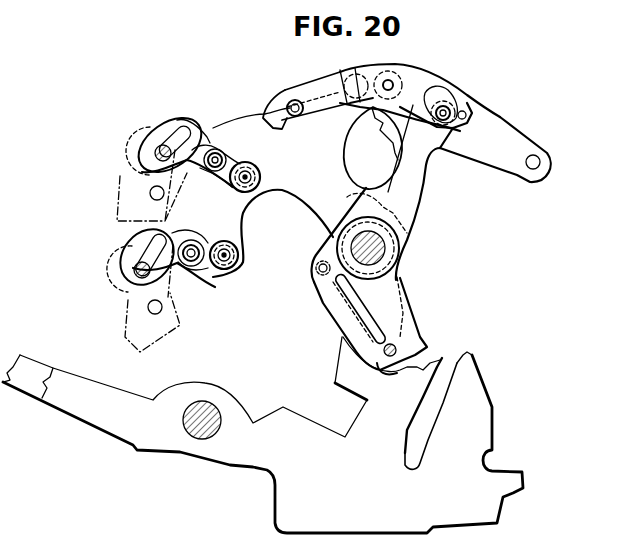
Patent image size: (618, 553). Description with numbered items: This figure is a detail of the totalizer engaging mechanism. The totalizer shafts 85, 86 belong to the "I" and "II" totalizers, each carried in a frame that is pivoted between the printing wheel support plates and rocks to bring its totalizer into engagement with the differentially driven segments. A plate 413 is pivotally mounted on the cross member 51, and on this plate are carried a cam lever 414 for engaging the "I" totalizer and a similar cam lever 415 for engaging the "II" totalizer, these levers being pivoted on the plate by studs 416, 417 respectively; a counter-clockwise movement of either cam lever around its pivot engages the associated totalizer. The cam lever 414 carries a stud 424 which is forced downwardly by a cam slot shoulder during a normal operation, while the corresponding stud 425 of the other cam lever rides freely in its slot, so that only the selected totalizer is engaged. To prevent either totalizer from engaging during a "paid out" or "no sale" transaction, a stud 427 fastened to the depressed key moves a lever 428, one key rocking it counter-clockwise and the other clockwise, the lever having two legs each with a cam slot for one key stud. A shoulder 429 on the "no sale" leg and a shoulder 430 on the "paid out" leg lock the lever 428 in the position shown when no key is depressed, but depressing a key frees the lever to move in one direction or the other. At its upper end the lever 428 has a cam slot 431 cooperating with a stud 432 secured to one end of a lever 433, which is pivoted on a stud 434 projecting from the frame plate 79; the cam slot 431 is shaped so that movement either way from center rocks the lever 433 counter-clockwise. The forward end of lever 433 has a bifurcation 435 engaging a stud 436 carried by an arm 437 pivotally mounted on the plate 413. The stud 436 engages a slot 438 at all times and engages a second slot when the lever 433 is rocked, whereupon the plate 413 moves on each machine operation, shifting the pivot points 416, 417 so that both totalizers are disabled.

The cross member 51 is at (383, 248).
The printing wheel support plate 79 is at (517, 133).
The totalizer shaft 85 is at (142, 172).
The totalizer shaft 86 is at (133, 268).
The plate 413 is at (262, 196).
The cam lever 414 is at (232, 180).
The cam lever 415 is at (212, 247).
The stud 416 is at (252, 171).
The stud 417 is at (236, 254).
The stud 424 is at (229, 155).
The stud 425 is at (200, 268).
The stud 427 is at (438, 362).
The lever 428 is at (417, 192).
The shoulder 429 is at (417, 347).
The shoulder 430 is at (387, 366).
The cam slot 431 is at (473, 103).
The stud 432 is at (447, 110).
The lever 433 is at (413, 104).
The stud 434 is at (377, 79).
The bifurcation 435 is at (266, 114).
The stud 436 is at (291, 104).
The arm 437 is at (322, 84).
The slot 438 is at (302, 130).